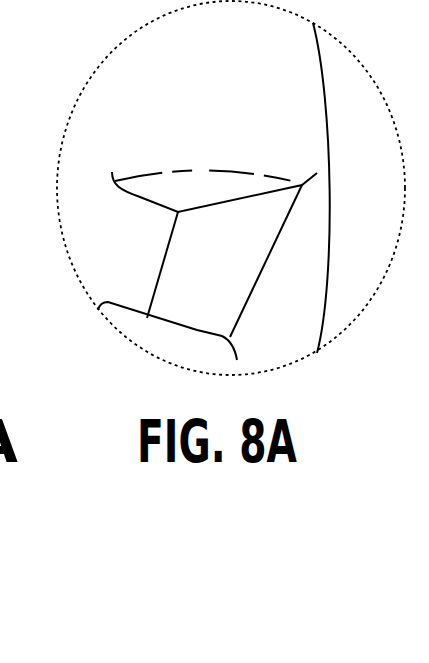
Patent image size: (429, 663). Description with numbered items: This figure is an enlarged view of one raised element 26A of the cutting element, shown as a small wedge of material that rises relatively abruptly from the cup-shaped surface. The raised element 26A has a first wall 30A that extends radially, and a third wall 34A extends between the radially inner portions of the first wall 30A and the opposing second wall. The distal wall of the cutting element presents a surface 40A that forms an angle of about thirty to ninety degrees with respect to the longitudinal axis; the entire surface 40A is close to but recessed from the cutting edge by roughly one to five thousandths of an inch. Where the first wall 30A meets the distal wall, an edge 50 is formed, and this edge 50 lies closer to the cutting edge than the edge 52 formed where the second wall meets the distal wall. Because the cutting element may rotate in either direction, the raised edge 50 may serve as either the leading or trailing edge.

The raised element 26A is at (266, 148).
The first wall 30A is at (195, 190).
The third wall 34A is at (107, 263).
The surface 40A is at (253, 258).
The edge 50 is at (222, 204).
The edge 52 is at (176, 324).